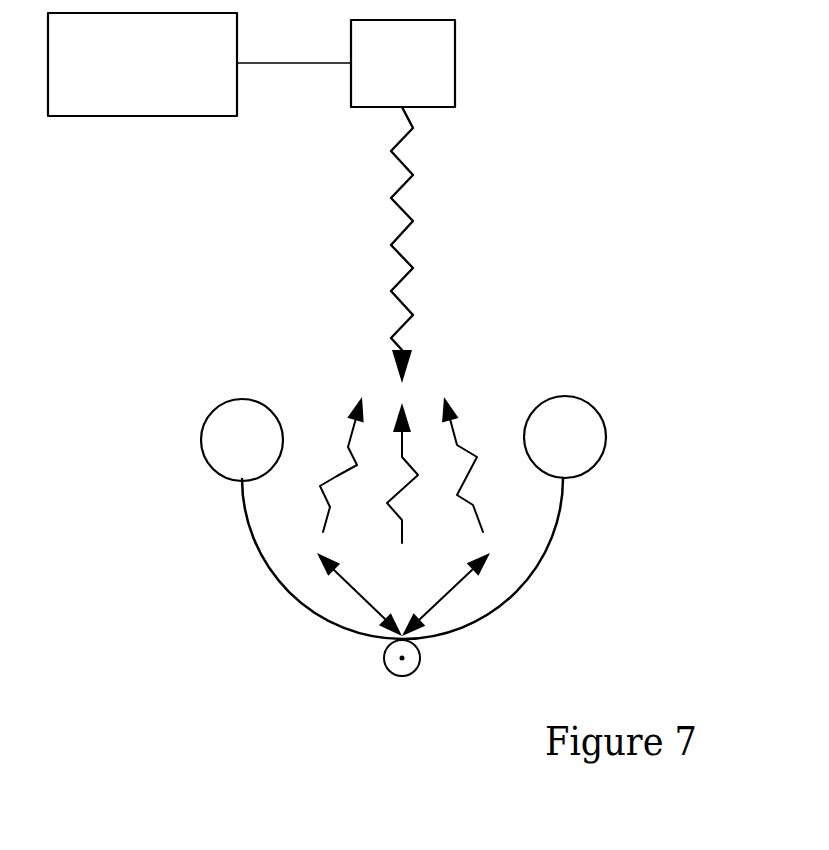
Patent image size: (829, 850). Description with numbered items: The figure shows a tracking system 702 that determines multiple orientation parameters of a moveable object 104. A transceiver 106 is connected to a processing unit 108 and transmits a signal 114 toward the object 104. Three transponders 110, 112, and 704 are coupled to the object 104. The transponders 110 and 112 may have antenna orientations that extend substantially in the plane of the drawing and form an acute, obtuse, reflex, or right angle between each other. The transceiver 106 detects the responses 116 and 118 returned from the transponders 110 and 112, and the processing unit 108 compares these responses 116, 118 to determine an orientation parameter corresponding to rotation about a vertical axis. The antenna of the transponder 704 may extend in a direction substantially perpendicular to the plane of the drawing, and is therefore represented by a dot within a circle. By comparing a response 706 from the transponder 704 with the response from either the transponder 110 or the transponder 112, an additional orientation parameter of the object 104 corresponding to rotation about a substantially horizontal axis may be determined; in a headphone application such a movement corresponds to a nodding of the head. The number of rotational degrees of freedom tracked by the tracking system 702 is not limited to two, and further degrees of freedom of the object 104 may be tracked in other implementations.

The moveable object 104 is at (550, 550).
The transceiver 106 is at (455, 58).
The processing unit 108 is at (143, 116).
The transponder 110 is at (350, 592).
The transponder 112 is at (452, 593).
The signal 114 is at (408, 210).
The response 116 is at (337, 477).
The response 118 is at (478, 452).
The tracking system 702 is at (562, 195).
The transponder 704 is at (403, 676).
The response 706 is at (410, 460).